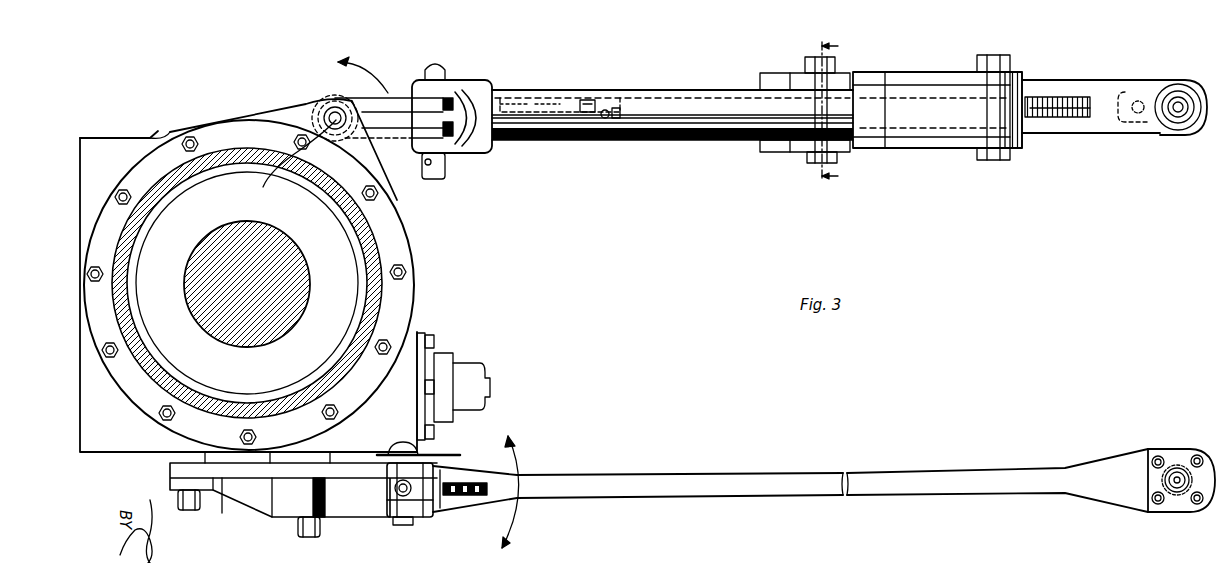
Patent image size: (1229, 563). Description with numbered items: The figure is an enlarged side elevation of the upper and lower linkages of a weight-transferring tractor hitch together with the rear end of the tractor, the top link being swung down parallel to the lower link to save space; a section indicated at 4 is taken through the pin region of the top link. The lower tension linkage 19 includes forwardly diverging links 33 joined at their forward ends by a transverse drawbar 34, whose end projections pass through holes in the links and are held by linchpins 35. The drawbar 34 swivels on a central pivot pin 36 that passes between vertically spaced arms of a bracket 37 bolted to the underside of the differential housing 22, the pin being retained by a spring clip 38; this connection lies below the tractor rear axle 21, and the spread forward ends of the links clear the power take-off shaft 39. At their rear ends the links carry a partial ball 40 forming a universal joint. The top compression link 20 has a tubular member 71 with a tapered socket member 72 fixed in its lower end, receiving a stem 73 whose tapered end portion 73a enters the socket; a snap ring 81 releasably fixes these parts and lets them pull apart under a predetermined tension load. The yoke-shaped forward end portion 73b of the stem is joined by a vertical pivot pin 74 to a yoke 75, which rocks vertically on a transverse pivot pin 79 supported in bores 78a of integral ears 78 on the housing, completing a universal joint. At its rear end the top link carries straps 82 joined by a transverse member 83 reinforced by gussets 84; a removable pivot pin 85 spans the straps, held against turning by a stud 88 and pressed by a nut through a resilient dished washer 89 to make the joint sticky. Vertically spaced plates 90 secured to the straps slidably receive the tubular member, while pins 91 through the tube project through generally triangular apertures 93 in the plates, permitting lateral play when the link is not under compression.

The section line 4- 4 is at (830, 113).
The lower tension linkage 19 is at (690, 500).
The top compression link 20 is at (694, 150).
The tractor rear axle 21 is at (242, 348).
The differential housing 22 is at (413, 255).
The links 33 is at (676, 470).
The transverse drawbar 34 is at (388, 495).
The linchpins 35 is at (410, 517).
The pivot pin 36 is at (403, 525).
The bracket 37 is at (340, 478).
The spring clip 38 is at (445, 455).
The power take-off shaft 39 is at (492, 388).
The partial ball 40 is at (1178, 465).
The tubular member 71 is at (690, 90).
The socket member 72 is at (590, 100).
The stem 73 is at (505, 102).
The tapered end portion 73a is at (545, 108).
The forward end portion 73b is at (494, 98).
The vertical pivot pin 74 is at (443, 62).
The yoke 75 is at (380, 139).
The integral ears 78 is at (298, 107).
The bores 78a is at (262, 186).
The transverse pivot pin 79 is at (338, 111).
The snap ring 81 is at (617, 106).
The straps 82 is at (1110, 133).
The transverse member 83 is at (1050, 97).
The gussets 84 is at (1078, 117).
The removable pivot pin 85 is at (1178, 95).
The stud 88 is at (1138, 98).
The resilient dished washer 89 is at (1170, 133).
The plates 90 is at (790, 80).
The pins 91 is at (836, 67).
The apertures 93 is at (770, 75).